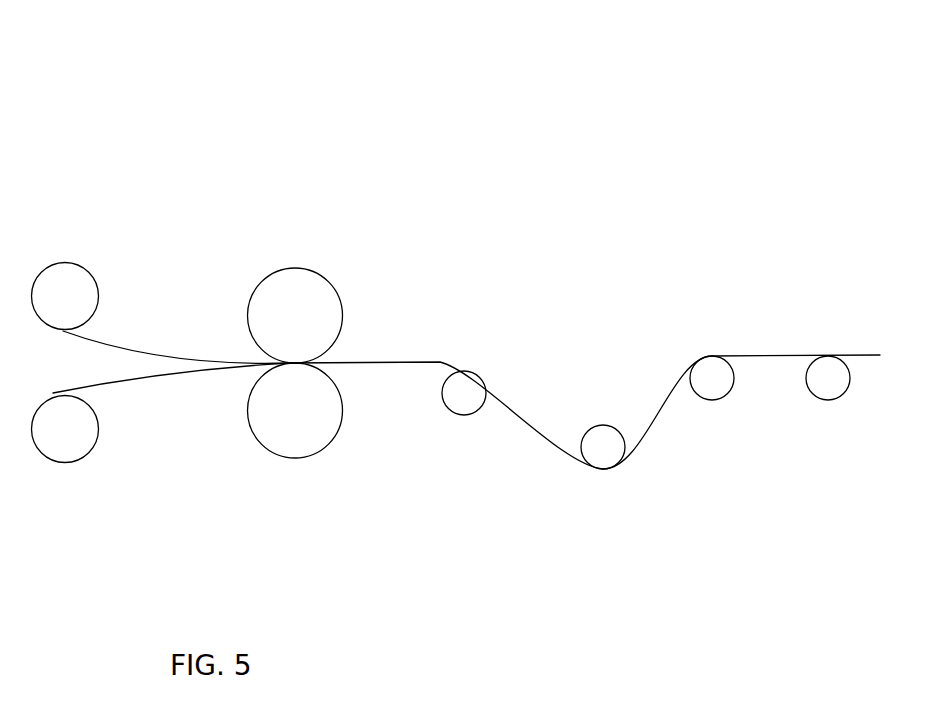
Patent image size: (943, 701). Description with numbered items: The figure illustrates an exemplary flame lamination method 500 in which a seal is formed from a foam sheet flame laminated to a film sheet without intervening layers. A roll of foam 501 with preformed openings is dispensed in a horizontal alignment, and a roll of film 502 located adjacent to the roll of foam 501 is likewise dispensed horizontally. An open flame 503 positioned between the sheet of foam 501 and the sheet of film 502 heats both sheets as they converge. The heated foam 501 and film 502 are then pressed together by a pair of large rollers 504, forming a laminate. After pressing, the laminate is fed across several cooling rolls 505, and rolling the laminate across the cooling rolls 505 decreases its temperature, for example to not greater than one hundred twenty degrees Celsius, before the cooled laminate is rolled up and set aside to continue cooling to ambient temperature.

The web processing apparatus 500 is at (346, 118).
The roll of foam 501 is at (58, 263).
The roll of film 502 is at (60, 462).
The open flame 503 is at (228, 363).
The large rollers 504 is at (296, 268).
The cooling rolls 505 is at (470, 370).